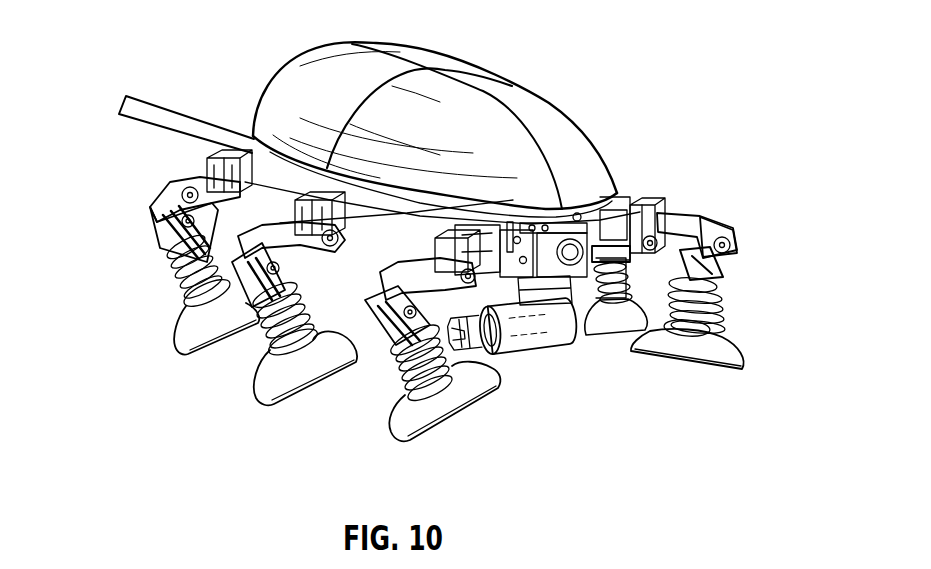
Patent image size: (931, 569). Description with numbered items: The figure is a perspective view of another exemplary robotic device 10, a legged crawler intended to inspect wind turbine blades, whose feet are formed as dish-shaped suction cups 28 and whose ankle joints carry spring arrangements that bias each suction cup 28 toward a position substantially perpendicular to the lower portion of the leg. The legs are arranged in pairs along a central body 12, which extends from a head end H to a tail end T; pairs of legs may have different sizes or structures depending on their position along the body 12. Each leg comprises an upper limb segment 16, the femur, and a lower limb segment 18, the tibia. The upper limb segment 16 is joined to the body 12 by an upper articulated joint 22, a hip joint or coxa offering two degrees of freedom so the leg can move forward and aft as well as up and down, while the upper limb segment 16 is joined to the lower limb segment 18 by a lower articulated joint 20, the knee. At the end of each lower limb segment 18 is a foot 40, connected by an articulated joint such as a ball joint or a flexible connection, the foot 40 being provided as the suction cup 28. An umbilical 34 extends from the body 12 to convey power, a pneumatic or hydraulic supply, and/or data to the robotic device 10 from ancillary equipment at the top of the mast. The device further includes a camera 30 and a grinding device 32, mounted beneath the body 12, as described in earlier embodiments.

The robotic device 10 is at (154, 387).
The body 12 is at (548, 101).
The tail end T is at (313, 61).
The head end H is at (587, 141).
The umbilical 34 is at (156, 94).
The upper articulated joint 22 is at (210, 160).
The upper limb segment 16 is at (170, 184).
The lower articulated joint 20 is at (150, 210).
The lower limb segment 18 is at (160, 247).
The foot 40 is at (262, 350).
The suction cup 28 is at (283, 400).
The camera 30 is at (598, 290).
The grinding device 32 is at (537, 347).